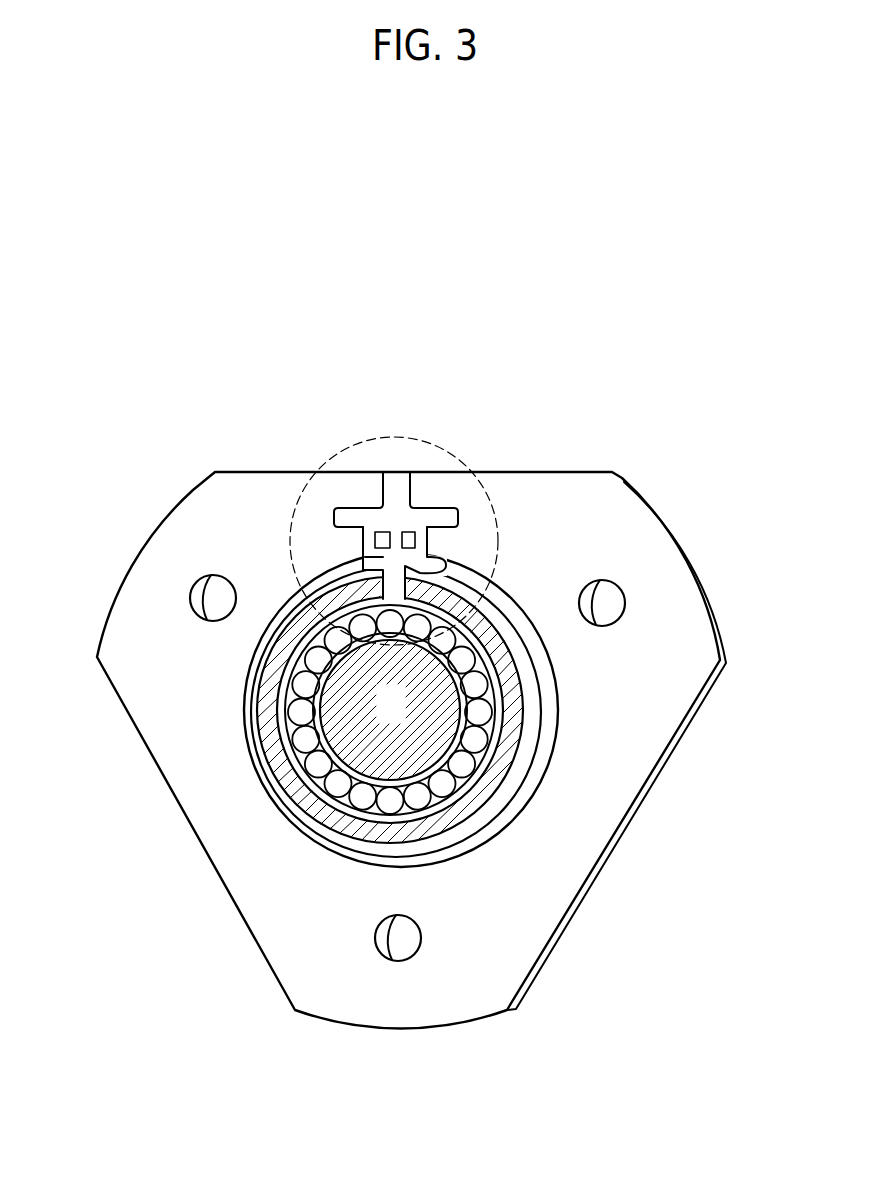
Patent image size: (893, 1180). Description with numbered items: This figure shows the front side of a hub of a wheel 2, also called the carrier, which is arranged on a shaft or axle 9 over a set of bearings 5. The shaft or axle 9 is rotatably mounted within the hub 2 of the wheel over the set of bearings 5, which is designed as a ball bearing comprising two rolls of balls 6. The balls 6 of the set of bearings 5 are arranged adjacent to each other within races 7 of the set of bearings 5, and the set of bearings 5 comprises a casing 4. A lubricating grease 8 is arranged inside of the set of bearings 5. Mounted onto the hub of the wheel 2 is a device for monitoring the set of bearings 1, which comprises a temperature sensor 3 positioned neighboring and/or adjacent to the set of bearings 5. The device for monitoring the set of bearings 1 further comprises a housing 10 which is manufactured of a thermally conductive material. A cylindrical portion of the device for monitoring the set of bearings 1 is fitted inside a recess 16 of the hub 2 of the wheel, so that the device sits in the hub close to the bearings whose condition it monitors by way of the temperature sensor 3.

The device for monitoring a set of bearings 1 is at (425, 492).
The hub of a wheel 2 is at (641, 692).
The temperature sensor 3 is at (500, 542).
The casing 4 is at (490, 762).
The set of bearings 5 is at (307, 725).
The balls 6 is at (390, 712).
The races 7 is at (445, 762).
The lubricating grease 8 is at (327, 773).
The shaft or axle 9 is at (404, 723).
The housing 10 is at (368, 492).
The recess 16 is at (387, 583).